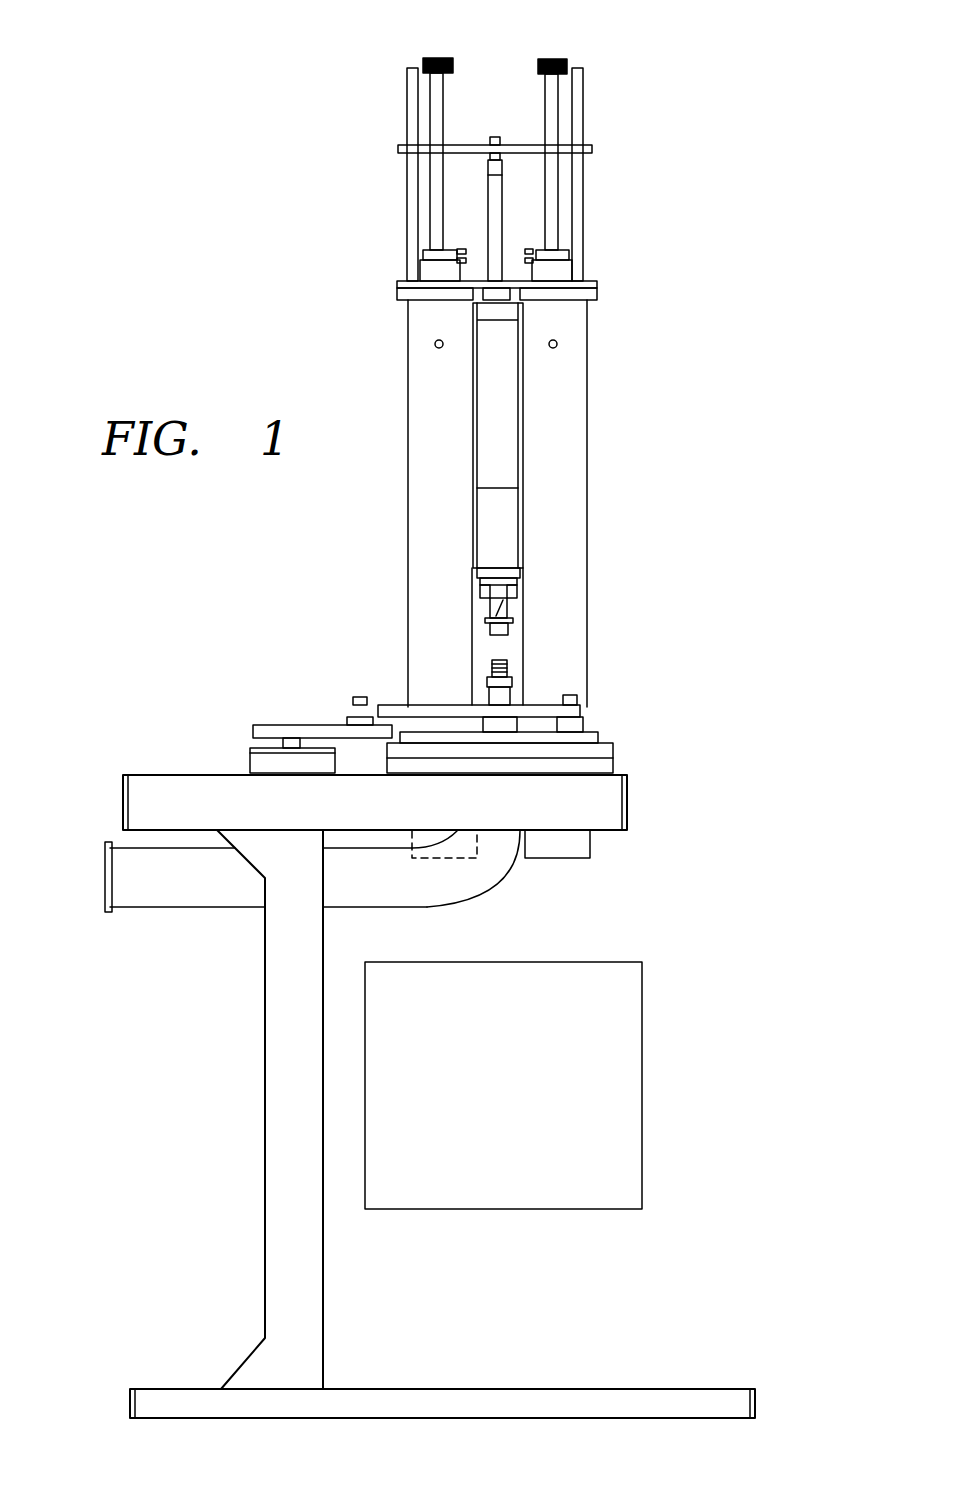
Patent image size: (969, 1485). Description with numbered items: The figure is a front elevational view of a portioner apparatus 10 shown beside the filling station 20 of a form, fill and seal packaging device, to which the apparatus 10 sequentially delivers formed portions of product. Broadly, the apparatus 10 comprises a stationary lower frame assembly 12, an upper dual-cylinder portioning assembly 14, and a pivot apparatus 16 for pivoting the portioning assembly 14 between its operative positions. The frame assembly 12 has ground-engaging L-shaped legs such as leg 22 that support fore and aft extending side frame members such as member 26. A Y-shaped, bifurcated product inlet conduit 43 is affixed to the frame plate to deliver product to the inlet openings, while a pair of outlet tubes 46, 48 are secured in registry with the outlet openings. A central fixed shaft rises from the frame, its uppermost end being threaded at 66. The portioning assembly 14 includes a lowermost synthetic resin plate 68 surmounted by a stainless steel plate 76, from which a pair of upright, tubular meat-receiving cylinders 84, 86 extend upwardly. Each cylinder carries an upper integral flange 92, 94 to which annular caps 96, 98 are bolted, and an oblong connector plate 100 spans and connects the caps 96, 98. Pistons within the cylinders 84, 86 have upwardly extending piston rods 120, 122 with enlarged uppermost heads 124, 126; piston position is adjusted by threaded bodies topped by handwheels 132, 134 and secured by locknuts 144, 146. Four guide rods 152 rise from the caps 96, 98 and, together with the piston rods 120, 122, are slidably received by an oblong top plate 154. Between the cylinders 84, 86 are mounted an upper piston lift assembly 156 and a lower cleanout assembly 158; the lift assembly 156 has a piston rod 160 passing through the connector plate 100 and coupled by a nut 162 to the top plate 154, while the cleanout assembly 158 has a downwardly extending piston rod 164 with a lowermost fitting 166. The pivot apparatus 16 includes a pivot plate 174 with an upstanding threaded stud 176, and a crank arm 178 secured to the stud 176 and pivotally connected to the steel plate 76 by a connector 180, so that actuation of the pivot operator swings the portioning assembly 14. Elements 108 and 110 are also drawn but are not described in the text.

The portioner apparatus 10 is at (732, 166).
The lower frame assembly 12 is at (236, 1120).
The dual-cylinder portioning assembly 14 is at (832, 612).
The pivot apparatus 16 is at (272, 604).
The filling station 20 is at (644, 1190).
The L-shaped leg 22 is at (327, 1336).
The side frame member 26 is at (185, 800).
The product inlet conduit 43 is at (150, 908).
The outlet tube 46 is at (445, 866).
The outlet tube 48 is at (570, 866).
The threaded end of shaft 66 is at (507, 660).
The synthetic resin plate 68 is at (612, 758).
The stainless steel plate 76 is at (597, 736).
The meat-receiving cylinder 84 is at (408, 540).
The meat-receiving cylinder 86 is at (587, 486).
The upper cylinder flange 92 is at (403, 297).
The upper cylinder flange 94 is at (590, 297).
The annular cap 96 is at (398, 283).
The annular cap 98 is at (600, 288).
The connector plate 100 is at (470, 278).
The block 108 is at (503, 697).
The threaded coupling 110 is at (505, 677).
The piston rod 120 is at (436, 87).
The piston rod 122 is at (548, 93).
The piston rod head 124 is at (433, 59).
The piston rod head 126 is at (556, 58).
The handwheel 132 is at (462, 258).
The handwheel 134 is at (545, 256).
The locknut 144 is at (436, 326).
The locknut 146 is at (550, 326).
The guide rod 152 is at (408, 103).
The top plate 154 is at (592, 151).
The upper piston lift assembly 156 is at (500, 456).
The cleanout assembly 158 is at (490, 525).
The piston rod 160 is at (501, 196).
The nut 162 is at (491, 138).
The piston rod 164 is at (520, 580).
The fitting 166 is at (490, 630).
The pivot plate 174 is at (280, 733).
The threaded stud 176 is at (360, 699).
The crank arm 178 is at (400, 710).
The connector 180 is at (572, 700).